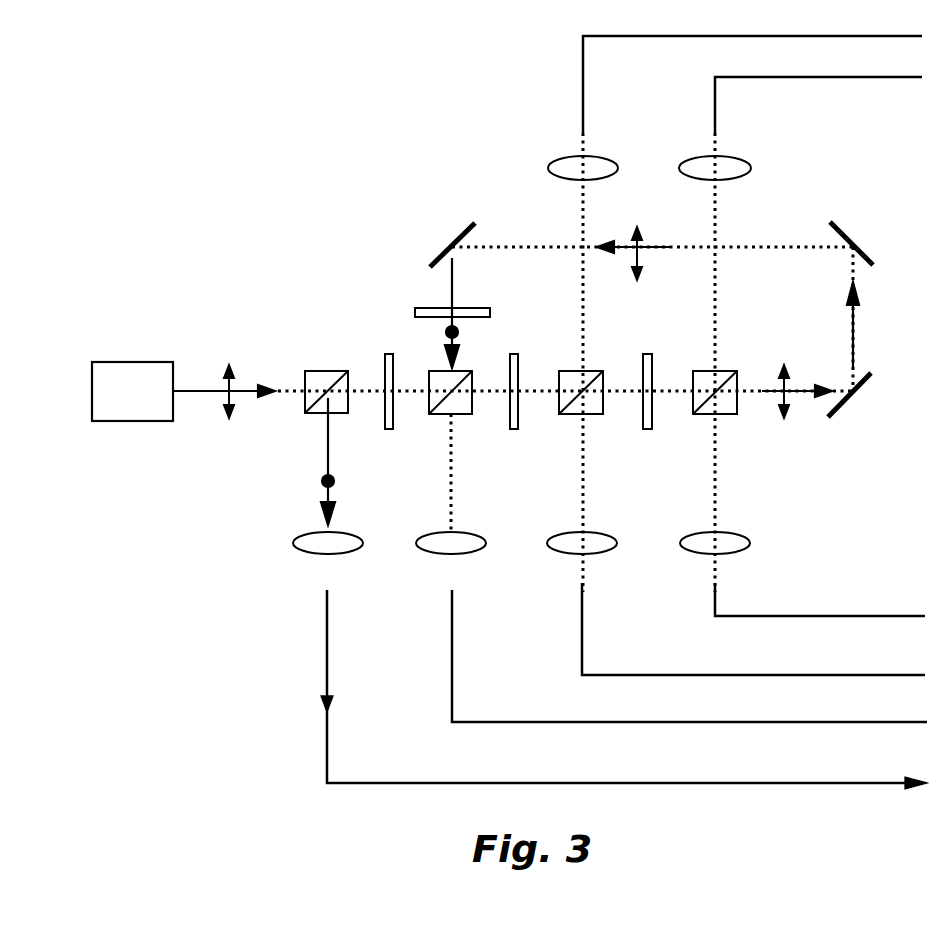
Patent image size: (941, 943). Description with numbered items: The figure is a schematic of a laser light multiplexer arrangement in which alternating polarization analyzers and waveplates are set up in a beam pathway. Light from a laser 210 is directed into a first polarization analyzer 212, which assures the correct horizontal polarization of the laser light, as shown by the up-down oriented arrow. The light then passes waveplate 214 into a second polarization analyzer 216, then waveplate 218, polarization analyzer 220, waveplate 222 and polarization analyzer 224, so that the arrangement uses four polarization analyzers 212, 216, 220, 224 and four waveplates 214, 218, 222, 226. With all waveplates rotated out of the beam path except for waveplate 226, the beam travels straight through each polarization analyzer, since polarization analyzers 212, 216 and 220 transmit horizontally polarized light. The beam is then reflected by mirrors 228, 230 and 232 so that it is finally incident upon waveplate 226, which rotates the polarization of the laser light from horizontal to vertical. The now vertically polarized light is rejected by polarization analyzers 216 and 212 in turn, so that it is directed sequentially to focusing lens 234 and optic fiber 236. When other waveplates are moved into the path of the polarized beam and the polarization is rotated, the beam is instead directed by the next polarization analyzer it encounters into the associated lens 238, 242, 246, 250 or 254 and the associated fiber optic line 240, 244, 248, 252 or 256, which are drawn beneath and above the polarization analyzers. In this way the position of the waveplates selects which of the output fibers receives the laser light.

The laser 210 is at (168, 362).
The first polarization analyzer 212 is at (340, 347).
The waveplate 214 is at (412, 347).
The second polarization analyzer 216 is at (462, 414).
The waveplate 218 is at (518, 362).
The polarization analyzer 220 is at (593, 414).
The waveplate 222 is at (654, 368).
The polarization analyzer 224 is at (726, 414).
The waveplate 226 is at (462, 308).
The mirror 228 is at (872, 383).
The mirror 230 is at (861, 247).
The mirror 232 is at (459, 235).
The focusing lens 234 is at (292, 543).
The optic fiber 236 is at (325, 752).
The lens 238 is at (420, 542).
The fiber optic line 240 is at (450, 692).
The lens 242 is at (556, 541).
The output fiber 244 is at (580, 637).
The lens 246 is at (690, 541).
The output fiber 248 is at (758, 620).
The lens 250 is at (754, 172).
The fiber optic line 252 is at (710, 118).
The lens 254 is at (548, 171).
The fiber optic line 256 is at (580, 78).